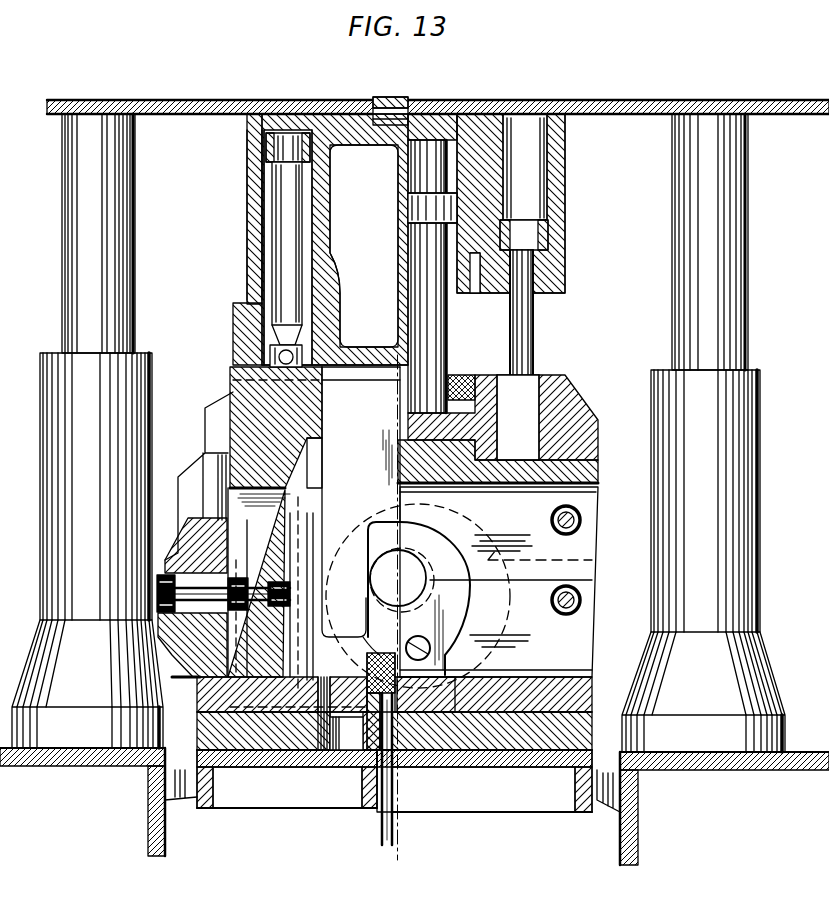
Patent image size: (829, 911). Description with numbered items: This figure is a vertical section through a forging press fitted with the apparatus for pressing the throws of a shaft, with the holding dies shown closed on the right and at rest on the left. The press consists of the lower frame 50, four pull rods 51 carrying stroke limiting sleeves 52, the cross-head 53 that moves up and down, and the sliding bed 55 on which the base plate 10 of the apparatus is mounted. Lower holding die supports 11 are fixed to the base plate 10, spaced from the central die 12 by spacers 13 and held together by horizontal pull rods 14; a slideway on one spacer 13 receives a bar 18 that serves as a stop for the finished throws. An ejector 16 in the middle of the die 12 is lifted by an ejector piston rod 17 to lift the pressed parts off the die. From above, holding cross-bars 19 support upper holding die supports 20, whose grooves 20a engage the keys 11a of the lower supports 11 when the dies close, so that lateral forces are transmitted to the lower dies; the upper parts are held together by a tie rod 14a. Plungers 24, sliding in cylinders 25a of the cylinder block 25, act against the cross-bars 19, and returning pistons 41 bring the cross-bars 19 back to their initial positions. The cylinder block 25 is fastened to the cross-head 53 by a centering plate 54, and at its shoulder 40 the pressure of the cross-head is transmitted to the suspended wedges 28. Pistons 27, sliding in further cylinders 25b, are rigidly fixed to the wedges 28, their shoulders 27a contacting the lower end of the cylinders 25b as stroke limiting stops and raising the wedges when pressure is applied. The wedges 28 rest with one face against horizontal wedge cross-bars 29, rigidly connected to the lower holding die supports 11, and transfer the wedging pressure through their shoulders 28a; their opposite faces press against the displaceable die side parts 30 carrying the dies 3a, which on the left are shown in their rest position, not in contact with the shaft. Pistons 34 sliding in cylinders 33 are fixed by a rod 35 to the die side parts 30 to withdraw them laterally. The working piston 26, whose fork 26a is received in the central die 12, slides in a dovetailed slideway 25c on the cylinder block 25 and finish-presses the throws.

The dies of the die side parts 3a is at (372, 520).
The base plate 10 is at (250, 758).
The lower holding die supports 11 is at (590, 642).
The keys or projections 11a is at (582, 579).
The central die 12 is at (346, 733).
The spacers 13 is at (585, 693).
The horizontal pull rods 14 is at (582, 603).
The tie rod 14a is at (582, 517).
The ejector 16 is at (410, 690).
The ejector piston rod 17 is at (382, 830).
The bar 18 is at (448, 600).
The holding cross-bars 19 is at (205, 427).
The upper holding die supports 20 is at (592, 495).
The grooves or recesses 20a is at (578, 560).
The plungers 24 is at (446, 323).
The cylinder block 25 is at (330, 222).
The cylinders 25a is at (442, 140).
The cylinders 25b is at (255, 188).
The dovetailed slideway 25c is at (390, 384).
The working piston 26 is at (322, 497).
The fork 26a is at (358, 643).
The pistons 27 is at (270, 232).
The shoulders 27a is at (312, 190).
The wedges 28 is at (240, 398).
The shoulders 28a is at (324, 455).
The horizontal wedge cross-bars 29 is at (176, 550).
The die side parts 30 is at (394, 713).
The cylinders 33 is at (192, 645).
The pistons 34 is at (156, 594).
The rod 35 is at (240, 582).
The shoulder 40 is at (248, 305).
The returning pistons 41 is at (548, 241).
The lower frame 50 is at (640, 806).
The pull rods 51 is at (122, 258).
The stroke limiting sleeves 52 is at (153, 388).
The cross-head 53 is at (624, 112).
The centering plate 54 is at (404, 97).
The sliding bed 55 is at (476, 805).